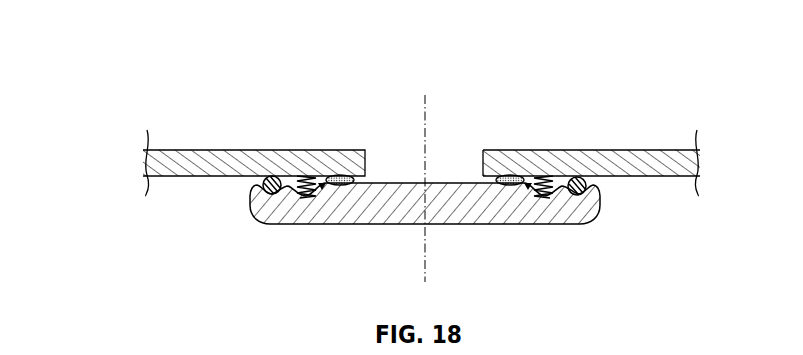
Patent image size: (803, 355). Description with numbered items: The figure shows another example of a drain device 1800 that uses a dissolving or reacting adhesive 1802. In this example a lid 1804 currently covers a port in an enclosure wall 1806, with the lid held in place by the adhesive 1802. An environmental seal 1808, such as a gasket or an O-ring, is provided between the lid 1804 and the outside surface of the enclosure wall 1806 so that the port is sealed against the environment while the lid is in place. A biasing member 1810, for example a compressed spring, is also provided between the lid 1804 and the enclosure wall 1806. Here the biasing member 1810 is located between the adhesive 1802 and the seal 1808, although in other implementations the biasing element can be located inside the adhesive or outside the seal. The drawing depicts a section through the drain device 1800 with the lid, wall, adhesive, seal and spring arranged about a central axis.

The drain device 1800 is at (128, 70).
The dissolving or reacting adhesive 1802 is at (487, 181).
The lid 1804 is at (310, 225).
The enclosure wall 1806 is at (277, 148).
The environmental seal 1808 is at (597, 180).
The biasing member 1810 is at (530, 187).